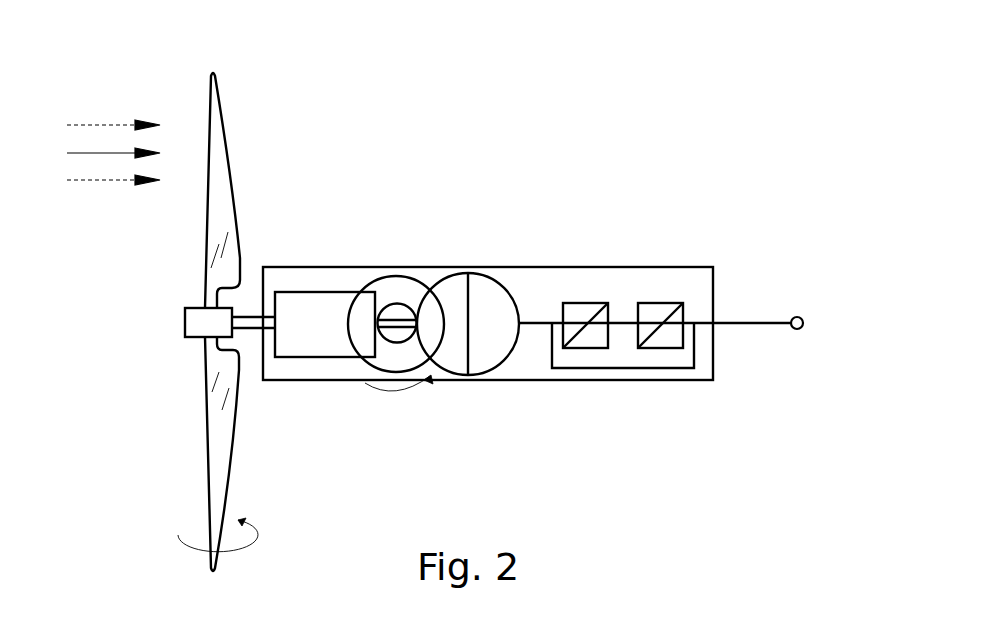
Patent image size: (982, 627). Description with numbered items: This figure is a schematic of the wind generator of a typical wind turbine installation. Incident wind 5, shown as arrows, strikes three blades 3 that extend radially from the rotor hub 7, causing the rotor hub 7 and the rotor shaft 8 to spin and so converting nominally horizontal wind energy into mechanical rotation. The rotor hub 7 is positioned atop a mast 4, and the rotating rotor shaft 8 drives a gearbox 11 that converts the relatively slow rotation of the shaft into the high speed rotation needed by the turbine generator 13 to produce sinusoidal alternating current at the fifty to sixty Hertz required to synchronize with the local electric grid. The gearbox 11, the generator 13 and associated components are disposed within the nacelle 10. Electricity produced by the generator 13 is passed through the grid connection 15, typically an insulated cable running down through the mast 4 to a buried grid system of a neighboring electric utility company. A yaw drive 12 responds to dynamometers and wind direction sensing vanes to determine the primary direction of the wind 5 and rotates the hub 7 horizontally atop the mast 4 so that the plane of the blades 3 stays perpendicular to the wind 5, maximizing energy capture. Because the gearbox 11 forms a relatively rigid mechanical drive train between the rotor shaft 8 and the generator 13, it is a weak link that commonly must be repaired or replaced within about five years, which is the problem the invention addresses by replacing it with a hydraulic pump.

The blades 3 is at (235, 187).
The mast 4 is at (398, 275).
The wind 5 is at (93, 125).
The rotor hub 7 is at (195, 337).
The rotor shaft 8 is at (250, 331).
The nacelle 10 is at (660, 267).
The gearbox 11 is at (323, 291).
The yaw drive 12 is at (397, 345).
The turbine generator 13 is at (517, 290).
The grid connection 15 is at (795, 331).